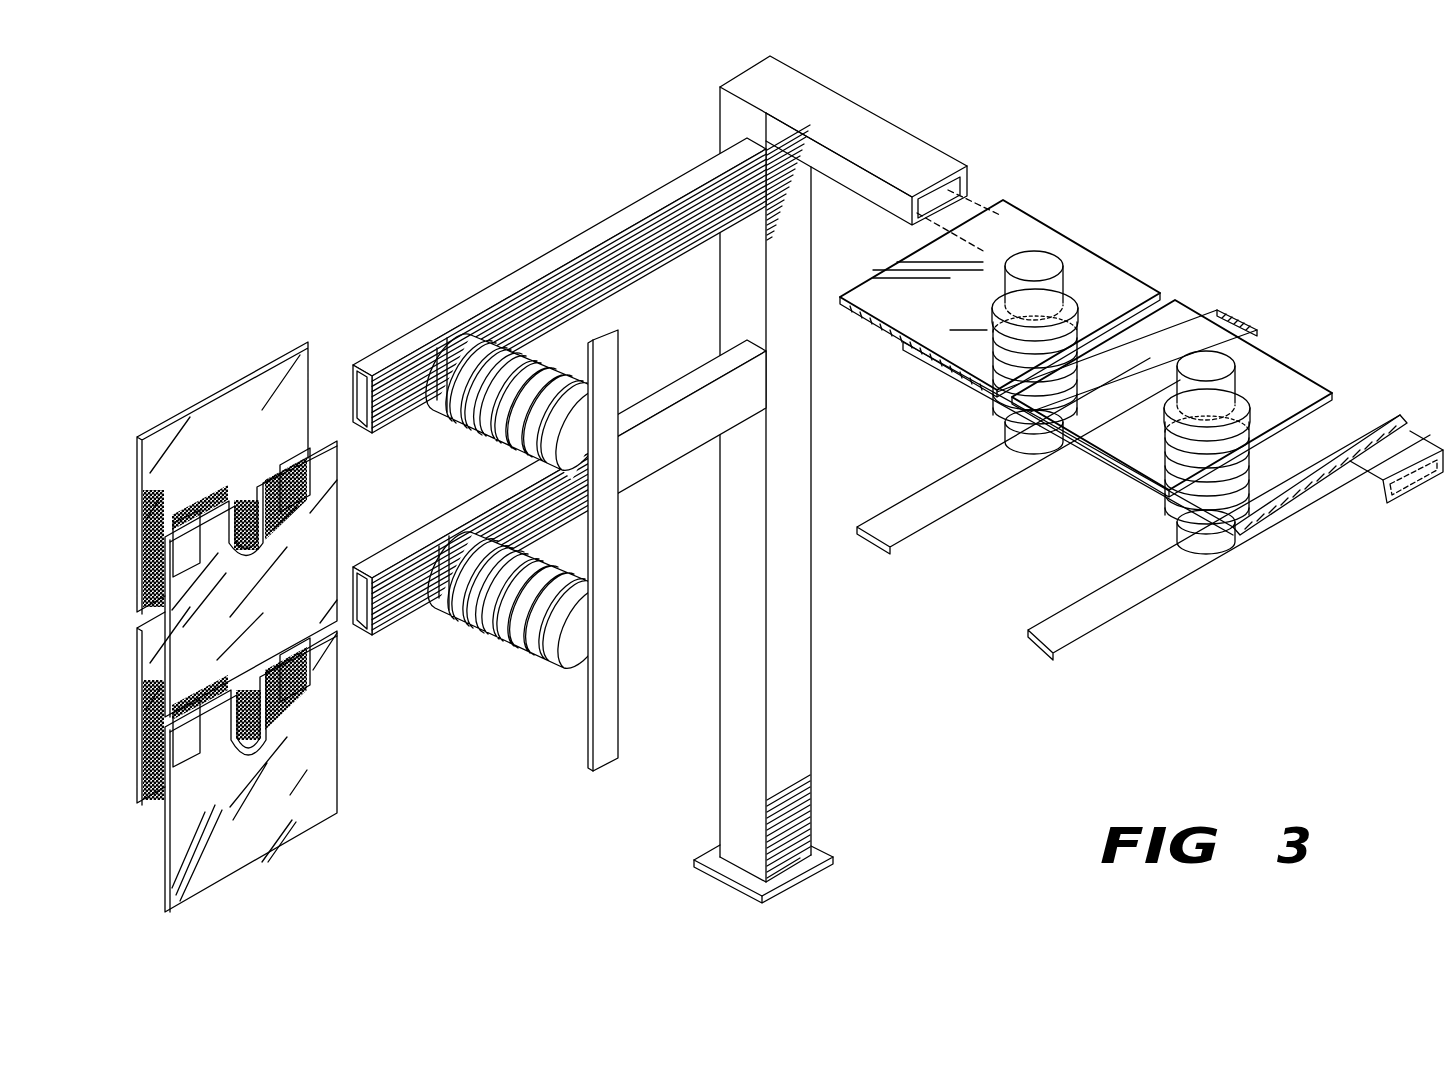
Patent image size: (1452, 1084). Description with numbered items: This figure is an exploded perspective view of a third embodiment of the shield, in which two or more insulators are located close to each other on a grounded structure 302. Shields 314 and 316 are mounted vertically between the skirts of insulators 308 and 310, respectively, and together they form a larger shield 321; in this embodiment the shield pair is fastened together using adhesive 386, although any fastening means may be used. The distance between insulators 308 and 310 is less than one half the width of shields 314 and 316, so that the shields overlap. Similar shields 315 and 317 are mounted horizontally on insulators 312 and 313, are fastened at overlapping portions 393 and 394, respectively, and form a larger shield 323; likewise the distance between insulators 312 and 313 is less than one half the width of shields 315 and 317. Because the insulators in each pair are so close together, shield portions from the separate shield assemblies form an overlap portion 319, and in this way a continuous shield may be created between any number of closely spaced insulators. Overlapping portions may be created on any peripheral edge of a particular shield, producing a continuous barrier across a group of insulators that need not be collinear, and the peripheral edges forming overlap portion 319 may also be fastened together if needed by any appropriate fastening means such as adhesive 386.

The grounded structure 302 is at (716, 127).
The insulator 308 is at (495, 432).
The insulator 310 is at (497, 632).
The insulator 312 is at (1070, 281).
The insulator 313 is at (1240, 381).
The shield 314 is at (329, 436).
The shield 315 is at (945, 372).
The shield 316 is at (169, 815).
The shield 317 is at (1121, 472).
The overlap portion 319 is at (1186, 300).
The larger shield 321 is at (222, 366).
The larger shield 323 is at (1141, 411).
The adhesive 386 is at (197, 498).
The overlapping portion 393 is at (1103, 227).
The overlapping portion 394 is at (1370, 379).